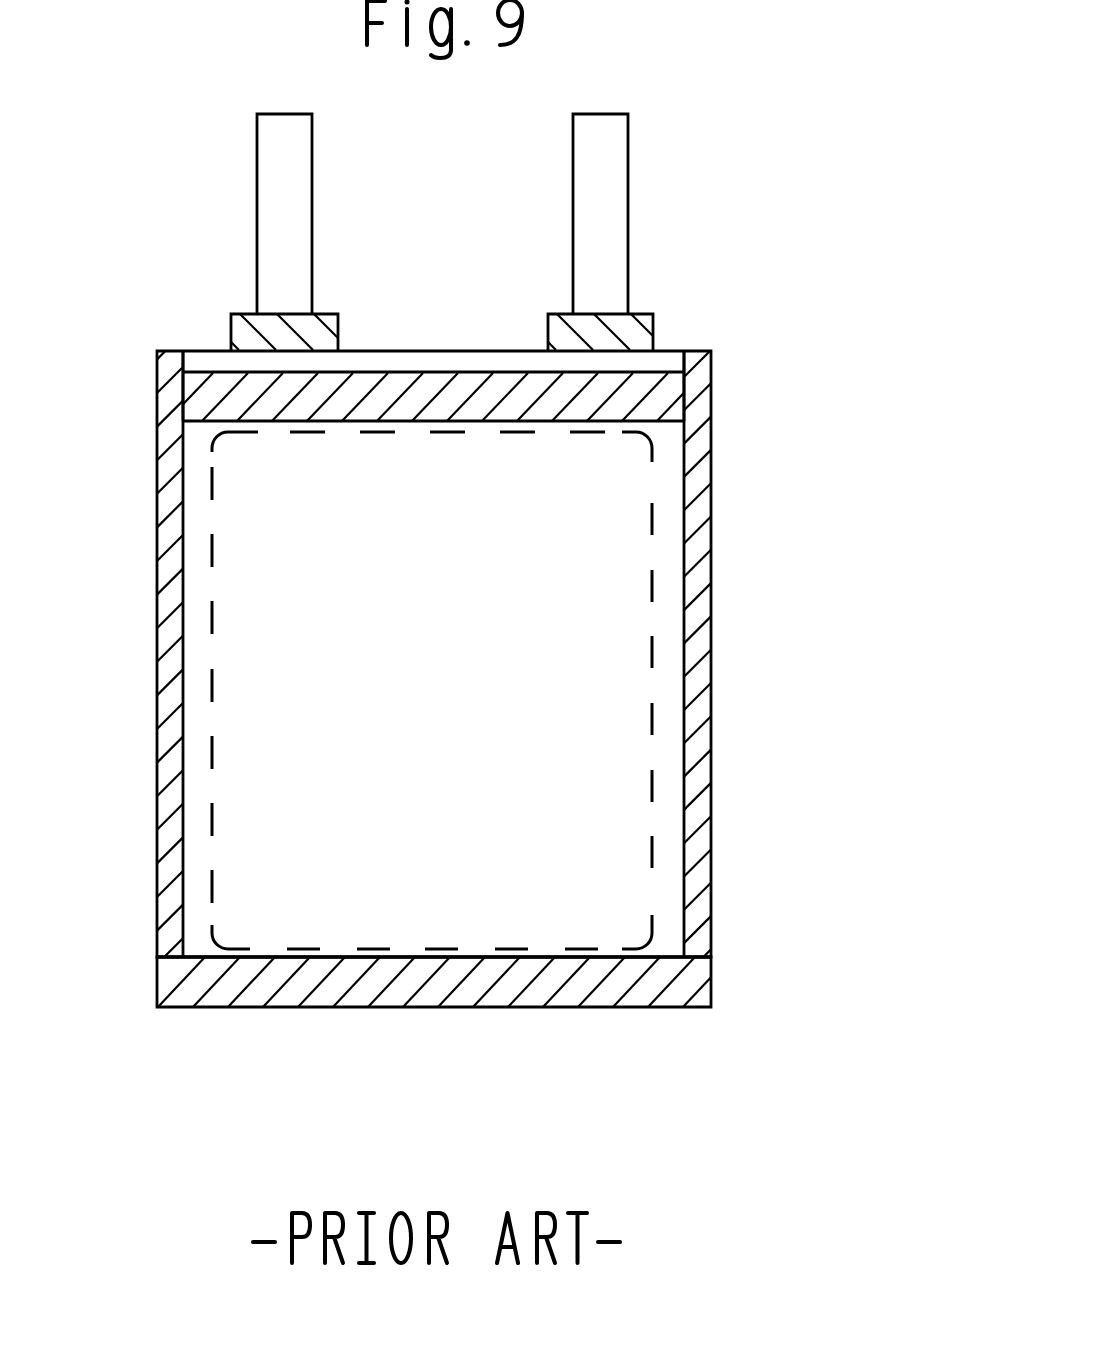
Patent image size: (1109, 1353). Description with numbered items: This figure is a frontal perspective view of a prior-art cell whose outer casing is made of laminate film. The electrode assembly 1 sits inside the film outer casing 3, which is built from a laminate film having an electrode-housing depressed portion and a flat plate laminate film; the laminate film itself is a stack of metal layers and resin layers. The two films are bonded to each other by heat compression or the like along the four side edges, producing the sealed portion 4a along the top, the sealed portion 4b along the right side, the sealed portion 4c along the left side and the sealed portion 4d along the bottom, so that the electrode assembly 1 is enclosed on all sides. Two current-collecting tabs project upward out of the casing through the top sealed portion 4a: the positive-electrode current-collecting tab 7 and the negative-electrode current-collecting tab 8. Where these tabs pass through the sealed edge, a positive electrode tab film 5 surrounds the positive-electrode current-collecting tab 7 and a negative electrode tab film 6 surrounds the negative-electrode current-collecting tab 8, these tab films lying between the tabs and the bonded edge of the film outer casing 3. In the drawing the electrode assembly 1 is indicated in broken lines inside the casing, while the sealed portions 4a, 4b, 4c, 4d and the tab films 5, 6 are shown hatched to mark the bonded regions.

The electrode assembly 1 is at (588, 697).
The film outer casing 3 is at (712, 915).
The sealed portion 4a is at (365, 387).
The sealed portion 4b is at (700, 450).
The sealed portion 4c is at (172, 532).
The sealed portion 4d is at (450, 960).
The positive electrode tab film 5 is at (247, 323).
The negative electrode tab film 6 is at (637, 320).
The positive-electrode current-collecting tab 7 is at (290, 188).
The negative-electrode current-collecting tab 8 is at (598, 197).